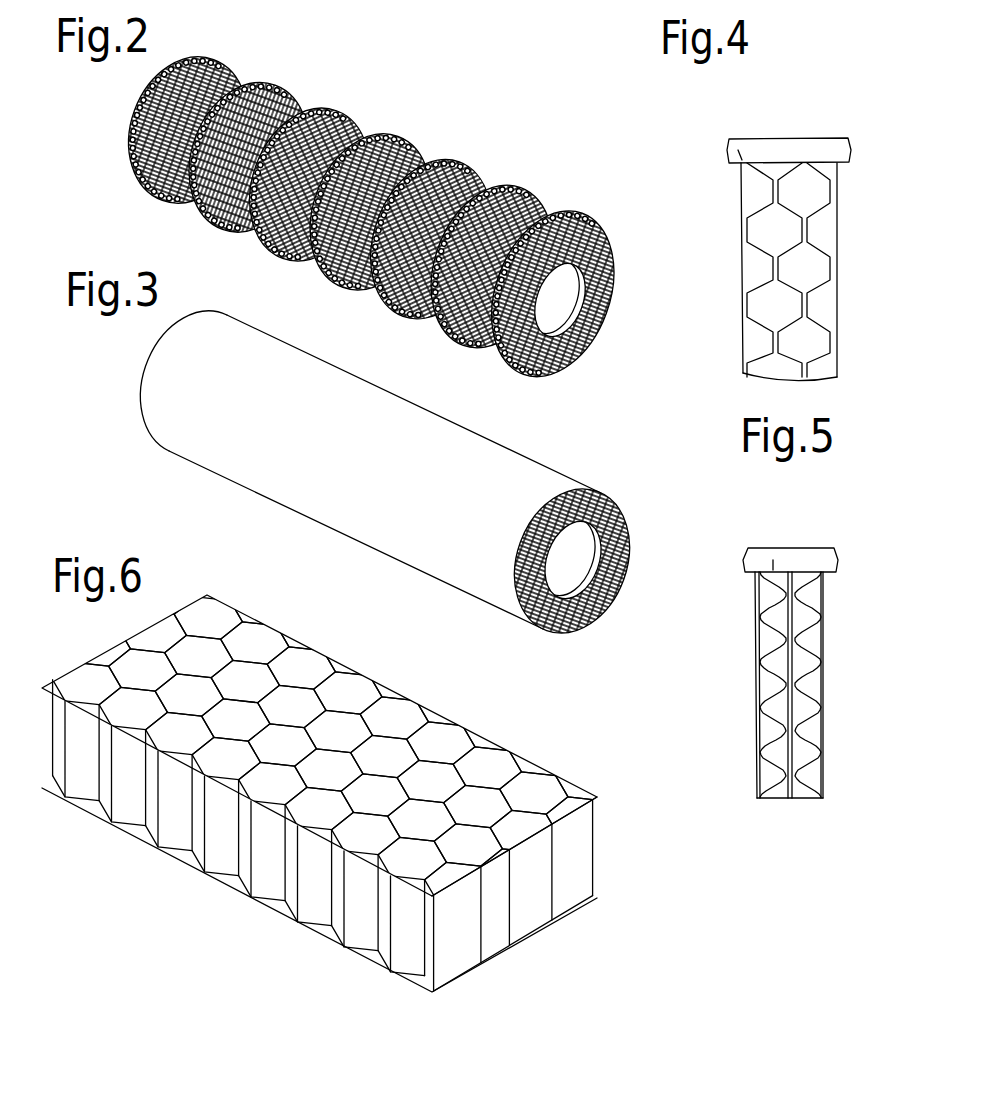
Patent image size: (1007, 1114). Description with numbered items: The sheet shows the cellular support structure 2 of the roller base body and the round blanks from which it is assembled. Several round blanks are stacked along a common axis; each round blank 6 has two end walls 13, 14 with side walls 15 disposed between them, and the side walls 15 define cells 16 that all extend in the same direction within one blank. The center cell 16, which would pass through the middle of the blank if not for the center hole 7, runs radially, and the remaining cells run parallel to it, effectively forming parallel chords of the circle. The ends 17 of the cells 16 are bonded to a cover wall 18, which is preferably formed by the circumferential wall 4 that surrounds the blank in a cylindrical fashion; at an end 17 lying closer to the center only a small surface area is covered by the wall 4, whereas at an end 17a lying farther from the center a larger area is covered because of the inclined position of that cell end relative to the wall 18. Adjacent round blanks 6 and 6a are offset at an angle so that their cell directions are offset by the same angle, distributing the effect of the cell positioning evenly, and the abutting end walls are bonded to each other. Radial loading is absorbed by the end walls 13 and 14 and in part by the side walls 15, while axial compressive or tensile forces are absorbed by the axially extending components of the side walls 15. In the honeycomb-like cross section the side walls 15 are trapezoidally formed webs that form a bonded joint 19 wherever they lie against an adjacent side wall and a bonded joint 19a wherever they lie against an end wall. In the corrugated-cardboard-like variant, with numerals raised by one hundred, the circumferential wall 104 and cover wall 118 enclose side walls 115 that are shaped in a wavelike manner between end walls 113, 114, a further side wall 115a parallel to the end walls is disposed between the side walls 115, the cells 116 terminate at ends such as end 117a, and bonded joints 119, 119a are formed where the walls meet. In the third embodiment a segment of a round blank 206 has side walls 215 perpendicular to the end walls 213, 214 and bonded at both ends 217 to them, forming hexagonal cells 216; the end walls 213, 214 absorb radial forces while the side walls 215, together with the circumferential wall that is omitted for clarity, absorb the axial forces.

In FIG. 3, the honeycomb body 2 is at (216, 483).
In FIG. 3, the circumferential wall 4 is at (528, 468).
In FIG. 4, the circumferential wall 4 is at (738, 150).
In FIG. 2, the round blank 6 is at (567, 343).
In FIG. 3, the round blank 6 is at (572, 608).
In FIG. 2, the adjacent round blank 6a is at (482, 338).
In FIG. 2, the center hole 7 is at (577, 302).
In FIG. 4, the end wall 13 is at (740, 192).
In FIG. 2, the end wall 14 is at (593, 265).
In FIG. 4, the end wall 14 is at (837, 222).
In FIG. 4, the side walls 15 is at (757, 247).
In FIG. 2, the cells 16 is at (600, 325).
In FIG. 4, the cells 16 is at (767, 223).
In FIG. 2, the cell end 17 is at (523, 263).
In FIG. 2, the cell end 17a is at (565, 225).
In FIG. 4, the cell end 17a is at (773, 168).
In FIG. 4, the cover wall 18 is at (820, 138).
In FIG. 4, the bonded joint 19 is at (807, 302).
In FIG. 4, the bonded joint 19a is at (832, 267).
In FIG. 5, the circumferential wall 104 is at (773, 560).
In FIG. 5, the end wall 113 is at (755, 612).
In FIG. 5, the end wall 114 is at (823, 608).
In FIG. 5, the side walls 115 is at (767, 640).
In FIG. 5, the side wall 115a is at (795, 722).
In FIG. 5, the cells 116 is at (770, 668).
In FIG. 5, the cell end 117a is at (803, 580).
In FIG. 5, the cover wall 118 is at (823, 548).
In FIG. 5, the bonded joint 119 is at (787, 693).
In FIG. 5, the bonded joint 119a is at (822, 668).
In FIG. 6, the round blank 206 is at (507, 772).
In FIG. 6, the end wall 213 is at (583, 798).
In FIG. 6, the end wall 214 is at (443, 973).
In FIG. 6, the side walls 215 is at (563, 863).
In FIG. 6, the hexagonal cells 216 is at (393, 860).
In FIG. 6, the cell ends 217 is at (420, 727).